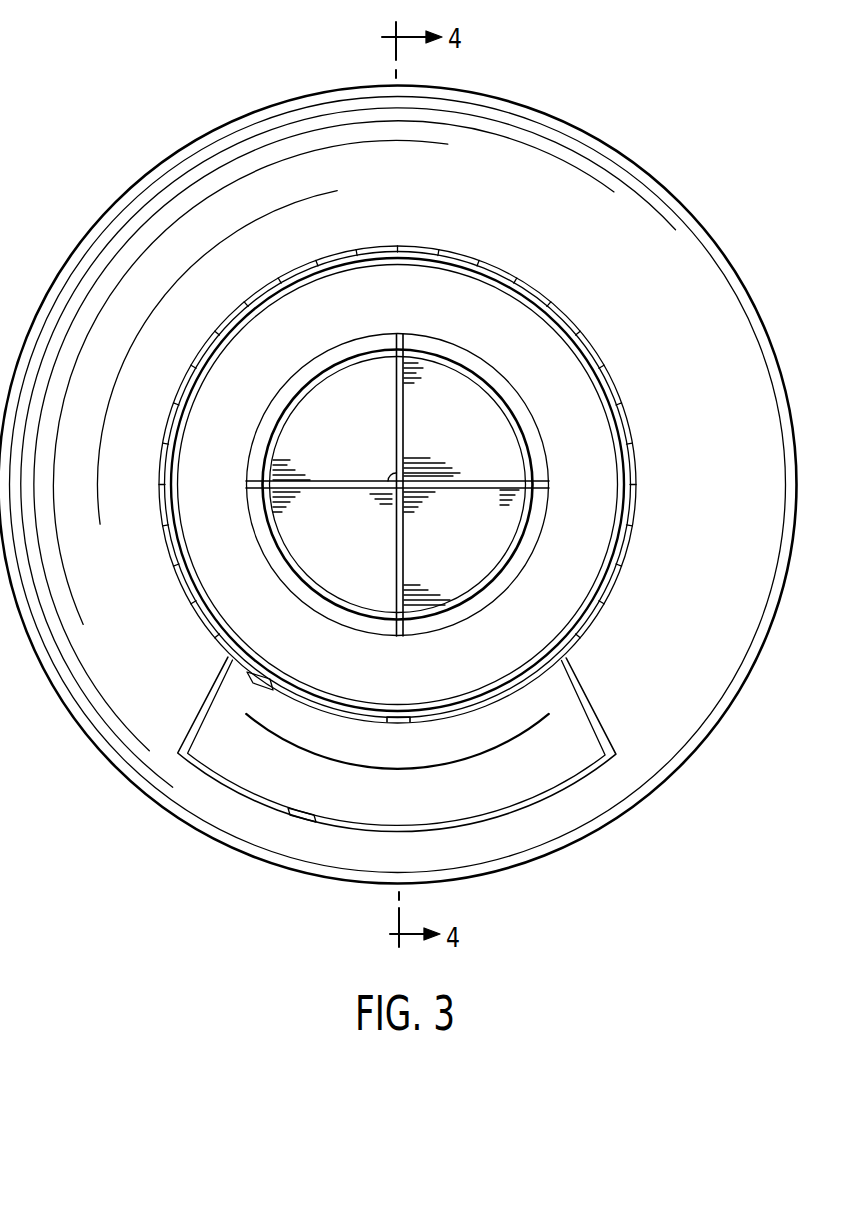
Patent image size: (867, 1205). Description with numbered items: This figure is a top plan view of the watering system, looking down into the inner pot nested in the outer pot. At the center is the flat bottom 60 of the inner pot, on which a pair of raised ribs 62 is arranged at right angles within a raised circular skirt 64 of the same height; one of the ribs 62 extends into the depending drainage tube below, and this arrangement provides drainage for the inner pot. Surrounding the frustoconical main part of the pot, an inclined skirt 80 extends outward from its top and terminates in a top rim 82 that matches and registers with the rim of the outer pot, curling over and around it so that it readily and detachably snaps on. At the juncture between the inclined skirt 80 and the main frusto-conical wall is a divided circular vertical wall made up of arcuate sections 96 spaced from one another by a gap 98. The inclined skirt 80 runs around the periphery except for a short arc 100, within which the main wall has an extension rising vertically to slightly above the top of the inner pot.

The flat bottom 60 is at (471, 454).
The raised ribs 62 is at (395, 402).
The raised circular skirt 64 is at (470, 387).
The inclined skirt 80 is at (687, 327).
The top rim 82 is at (715, 243).
The arcuate sections 96 is at (565, 318).
The gap 98 is at (512, 275).
The short arc 100 is at (378, 780).